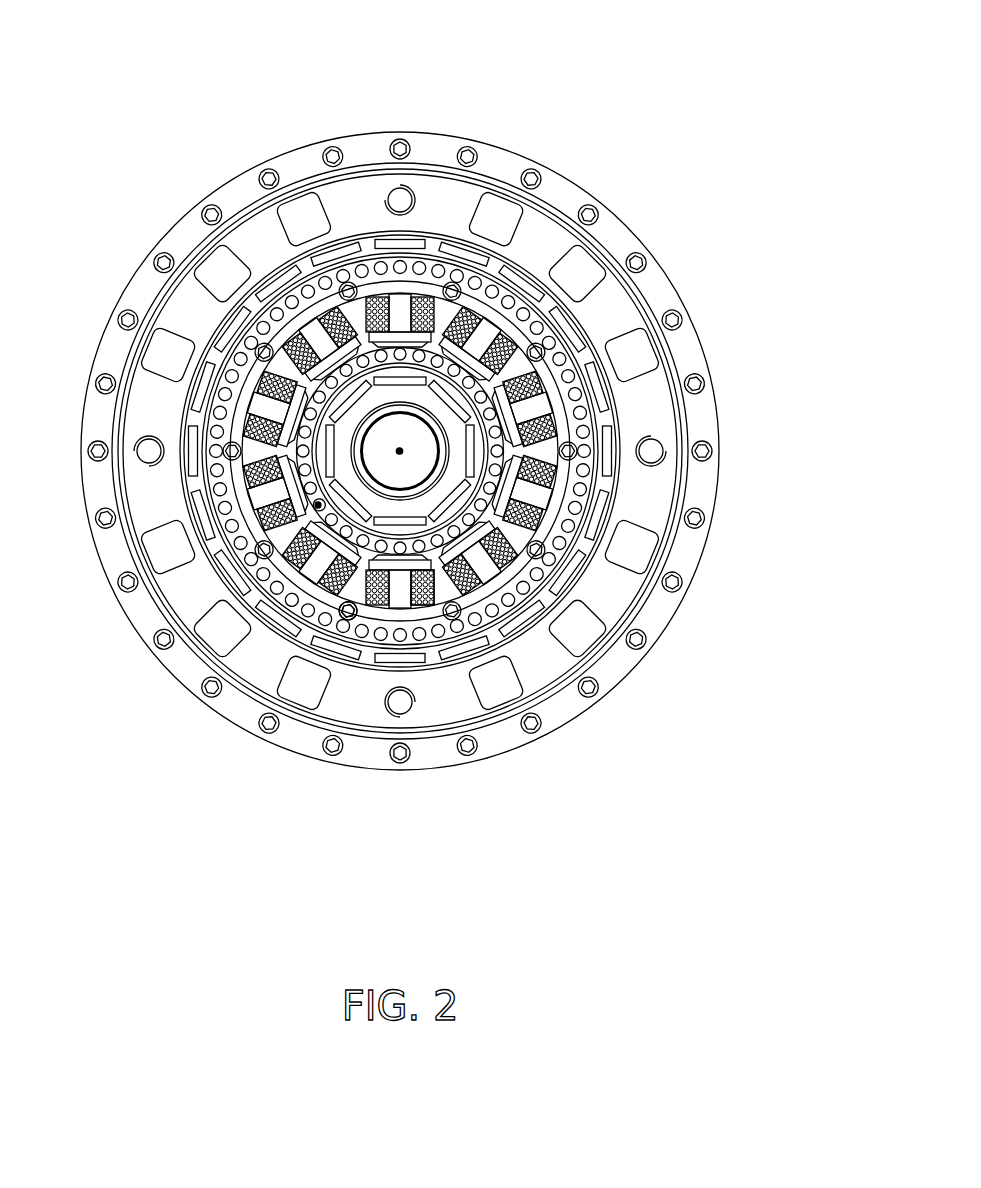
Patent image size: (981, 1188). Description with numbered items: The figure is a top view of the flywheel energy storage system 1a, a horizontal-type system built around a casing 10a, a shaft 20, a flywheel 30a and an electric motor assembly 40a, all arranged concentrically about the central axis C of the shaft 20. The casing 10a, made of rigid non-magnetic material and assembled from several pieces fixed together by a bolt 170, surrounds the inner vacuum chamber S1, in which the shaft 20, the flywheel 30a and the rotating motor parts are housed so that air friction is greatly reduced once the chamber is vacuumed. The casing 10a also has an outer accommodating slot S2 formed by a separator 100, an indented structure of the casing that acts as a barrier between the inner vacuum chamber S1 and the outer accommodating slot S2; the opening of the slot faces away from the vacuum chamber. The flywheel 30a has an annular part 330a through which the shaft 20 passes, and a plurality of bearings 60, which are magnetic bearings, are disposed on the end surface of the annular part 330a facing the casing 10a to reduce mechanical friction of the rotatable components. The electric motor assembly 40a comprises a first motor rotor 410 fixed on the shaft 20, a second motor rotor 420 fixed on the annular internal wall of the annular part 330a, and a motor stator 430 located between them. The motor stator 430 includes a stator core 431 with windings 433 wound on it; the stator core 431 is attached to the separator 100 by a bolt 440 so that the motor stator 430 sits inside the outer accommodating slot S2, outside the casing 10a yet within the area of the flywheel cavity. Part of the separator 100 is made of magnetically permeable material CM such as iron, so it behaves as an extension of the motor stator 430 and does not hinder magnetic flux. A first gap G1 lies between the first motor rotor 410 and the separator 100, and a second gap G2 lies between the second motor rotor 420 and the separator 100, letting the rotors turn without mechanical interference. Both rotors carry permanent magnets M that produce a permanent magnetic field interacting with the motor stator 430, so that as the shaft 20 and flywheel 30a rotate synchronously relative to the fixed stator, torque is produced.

The flywheel energy storage system 1a is at (162, 40).
The inner vacuum chamber S1 is at (370, 352).
The outer accommodating slot S2 is at (438, 316).
The annular part 330a is at (527, 237).
The flywheel 30a is at (567, 222).
The separator 100 is at (573, 382).
The magnetically permeable material CM is at (567, 450).
The casing 10a is at (718, 485).
The shaft 20 is at (408, 467).
The bearing 60 is at (483, 688).
The permanent magnet M is at (330, 472).
The second gap G2 is at (318, 505).
The first gap G1 is at (270, 558).
The bolt 170 is at (258, 727).
The bolt 440 is at (348, 612).
The stator core 431 is at (397, 595).
The windings 433 is at (423, 600).
The first motor rotor 410 is at (389, 512).
The motor stator 430 is at (400, 579).
The second motor rotor 420 is at (436, 660).
The electric motor assembly 40a is at (418, 570).
The central axis C is at (410, 452).